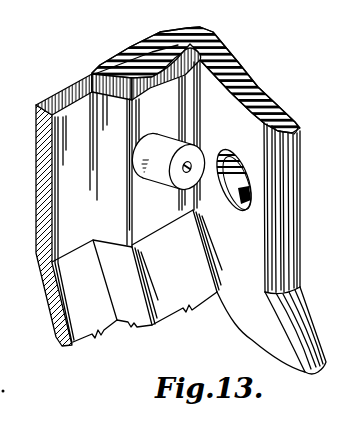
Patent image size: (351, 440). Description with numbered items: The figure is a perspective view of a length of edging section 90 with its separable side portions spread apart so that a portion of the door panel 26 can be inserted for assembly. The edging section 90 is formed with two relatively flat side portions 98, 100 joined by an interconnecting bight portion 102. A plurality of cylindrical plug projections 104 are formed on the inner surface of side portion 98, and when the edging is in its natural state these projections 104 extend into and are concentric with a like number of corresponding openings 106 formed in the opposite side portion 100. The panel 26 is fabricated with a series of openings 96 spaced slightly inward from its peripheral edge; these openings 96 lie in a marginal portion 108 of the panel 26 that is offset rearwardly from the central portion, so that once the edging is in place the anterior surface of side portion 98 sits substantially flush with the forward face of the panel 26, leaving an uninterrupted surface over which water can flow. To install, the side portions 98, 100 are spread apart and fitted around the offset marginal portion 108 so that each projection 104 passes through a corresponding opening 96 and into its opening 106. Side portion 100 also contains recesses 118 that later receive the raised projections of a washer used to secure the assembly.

The panel 26 is at (72, 279).
The edging section 90 is at (292, 264).
The openings 96 is at (146, 178).
The side portion 98 is at (122, 62).
The side portion 100 is at (270, 100).
The bight portion 102 is at (211, 48).
The cylindrical plug projections 104 is at (198, 200).
The openings 106 is at (271, 189).
The marginal portion 108 is at (157, 100).
The recess 118 is at (230, 192).